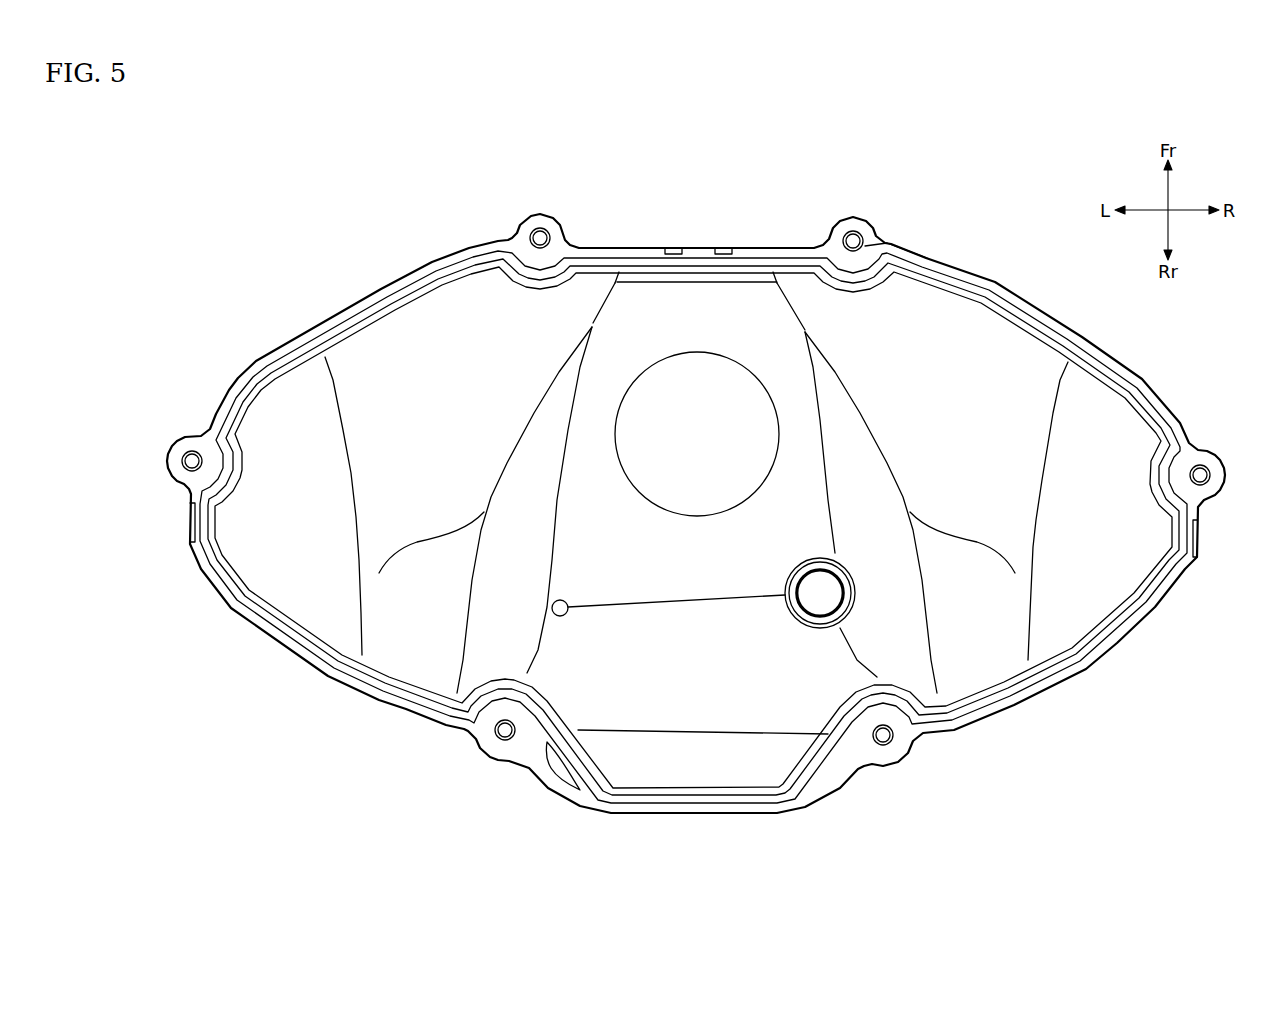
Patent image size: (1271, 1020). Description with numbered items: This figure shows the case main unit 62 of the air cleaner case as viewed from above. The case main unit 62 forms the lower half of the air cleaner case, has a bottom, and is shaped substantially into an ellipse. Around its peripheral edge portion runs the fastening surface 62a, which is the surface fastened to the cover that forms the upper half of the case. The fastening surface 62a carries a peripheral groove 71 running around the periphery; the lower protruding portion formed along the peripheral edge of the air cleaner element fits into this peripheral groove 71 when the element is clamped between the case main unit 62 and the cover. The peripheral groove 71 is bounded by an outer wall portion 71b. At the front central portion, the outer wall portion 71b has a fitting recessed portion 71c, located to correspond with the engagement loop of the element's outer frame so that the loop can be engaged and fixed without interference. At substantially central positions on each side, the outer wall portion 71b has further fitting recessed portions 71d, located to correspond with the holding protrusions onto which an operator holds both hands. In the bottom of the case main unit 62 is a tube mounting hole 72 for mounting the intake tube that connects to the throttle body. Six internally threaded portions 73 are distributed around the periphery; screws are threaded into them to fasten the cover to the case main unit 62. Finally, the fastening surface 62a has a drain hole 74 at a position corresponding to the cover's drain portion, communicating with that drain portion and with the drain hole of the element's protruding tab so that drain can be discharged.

The case main unit 62 is at (381, 288).
The fastening surface 62a is at (875, 252).
The peripheral groove 71 is at (985, 293).
The outer wall portion 71b is at (767, 247).
The fitting recessed portion 71c is at (721, 247).
The fitting recessed portion 71d is at (192, 524).
The tube mounting hole 72 is at (680, 356).
The internally threaded portion 73 is at (540, 229).
The drain hole 74 is at (562, 766).